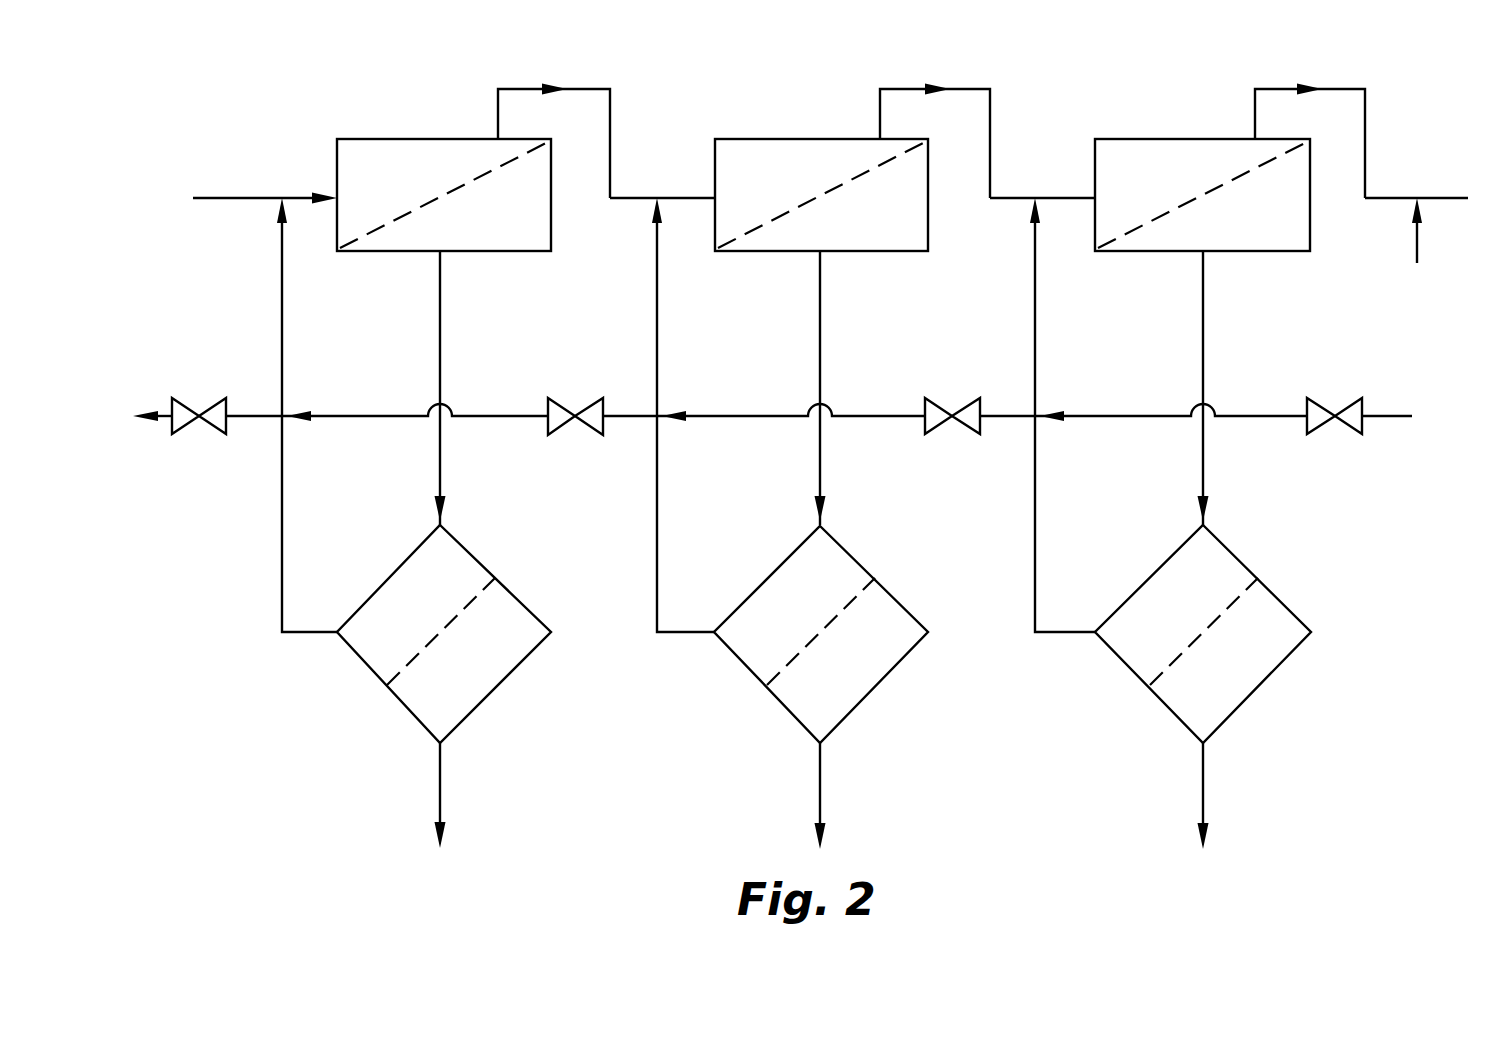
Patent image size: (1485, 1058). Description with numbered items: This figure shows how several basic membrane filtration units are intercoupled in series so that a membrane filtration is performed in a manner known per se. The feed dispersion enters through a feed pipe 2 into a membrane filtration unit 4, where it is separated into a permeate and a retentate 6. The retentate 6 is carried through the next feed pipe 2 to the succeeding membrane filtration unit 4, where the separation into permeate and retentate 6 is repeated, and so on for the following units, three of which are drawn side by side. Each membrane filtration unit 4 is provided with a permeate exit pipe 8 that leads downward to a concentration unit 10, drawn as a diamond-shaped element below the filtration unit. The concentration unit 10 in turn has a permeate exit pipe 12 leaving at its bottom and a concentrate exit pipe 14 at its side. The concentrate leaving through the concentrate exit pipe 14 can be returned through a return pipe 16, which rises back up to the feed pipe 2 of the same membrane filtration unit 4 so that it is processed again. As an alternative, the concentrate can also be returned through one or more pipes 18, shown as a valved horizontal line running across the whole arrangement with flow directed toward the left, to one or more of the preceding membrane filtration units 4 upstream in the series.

The feed pipe 2 is at (830, 207).
The membrane filtration unit 4 is at (410, 139).
The retentate 6 is at (931, 117).
The permeate exit pipe 8 is at (853, 388).
The concentration unit 10 is at (522, 600).
The permeate exit pipe 12 is at (862, 796).
The concentrate exit pipe 14 is at (675, 618).
The return pipe 16 is at (697, 379).
The pipe 18 is at (772, 391).